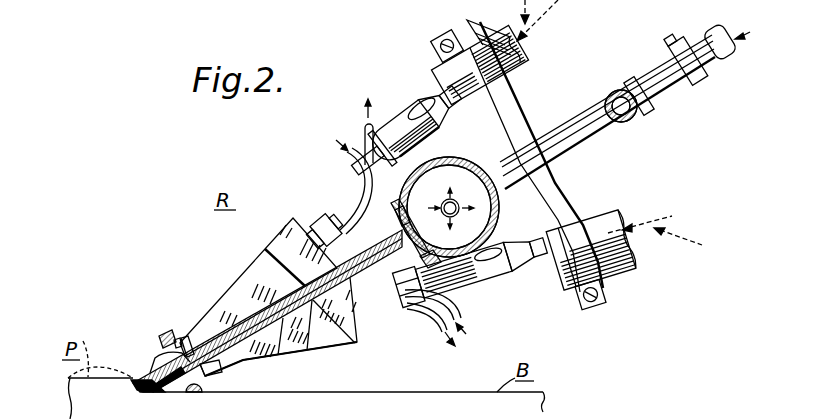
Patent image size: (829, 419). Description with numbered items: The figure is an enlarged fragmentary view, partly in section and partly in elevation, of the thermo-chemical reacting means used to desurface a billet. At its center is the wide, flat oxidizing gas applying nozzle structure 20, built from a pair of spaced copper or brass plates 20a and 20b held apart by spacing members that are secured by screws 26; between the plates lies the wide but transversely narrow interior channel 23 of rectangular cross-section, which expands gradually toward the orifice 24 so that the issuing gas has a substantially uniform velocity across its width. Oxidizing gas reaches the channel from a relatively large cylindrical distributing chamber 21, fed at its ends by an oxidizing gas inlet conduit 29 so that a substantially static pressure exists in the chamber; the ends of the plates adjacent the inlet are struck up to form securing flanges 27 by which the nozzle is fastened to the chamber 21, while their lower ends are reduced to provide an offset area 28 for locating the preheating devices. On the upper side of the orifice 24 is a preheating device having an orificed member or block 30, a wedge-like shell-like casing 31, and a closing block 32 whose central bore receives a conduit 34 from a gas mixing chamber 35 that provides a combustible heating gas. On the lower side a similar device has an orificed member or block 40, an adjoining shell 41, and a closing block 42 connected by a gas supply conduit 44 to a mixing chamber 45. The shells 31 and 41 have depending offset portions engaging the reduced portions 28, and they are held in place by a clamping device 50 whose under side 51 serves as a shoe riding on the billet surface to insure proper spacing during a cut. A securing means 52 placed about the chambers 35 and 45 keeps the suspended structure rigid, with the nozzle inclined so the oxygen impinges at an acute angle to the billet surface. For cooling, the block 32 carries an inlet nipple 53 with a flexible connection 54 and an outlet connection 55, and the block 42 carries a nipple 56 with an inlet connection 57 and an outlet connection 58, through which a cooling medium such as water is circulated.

The oxidizing gas applying nozzle structure 20 is at (243, 318).
The plate 20a is at (230, 327).
The plate 20b is at (282, 355).
The gas distributing chamber 21 is at (464, 158).
The interior channel 23 is at (355, 338).
The orifice 24 is at (147, 393).
The screws 26 is at (428, 262).
The securing flanges 27 is at (393, 210).
The offset area 28 is at (186, 337).
The oxidizing gas inlet conduit 29 is at (554, 128).
The orificed member or block 30 is at (156, 357).
The shell-like casing 31 is at (250, 266).
The closing block 32 is at (293, 222).
The conduit 34 is at (340, 185).
The gas mixing chamber 35 is at (438, 66).
The orificed member or block 40 is at (178, 392).
The shell 41 is at (311, 351).
The closing block 42 is at (341, 346).
The gas supply conduit 44 is at (408, 308).
The mixing chamber 45 is at (566, 296).
The clamping device 50 is at (160, 340).
The under side (shoe) 51 is at (213, 376).
The securing means 52 is at (574, 193).
The inlet nipple 53 is at (327, 213).
The flexible connection 54 is at (343, 146).
The outlet connection 55 is at (374, 129).
The nipple 56 is at (387, 308).
The inlet connection 57 is at (458, 306).
The outlet connection 58 is at (444, 334).